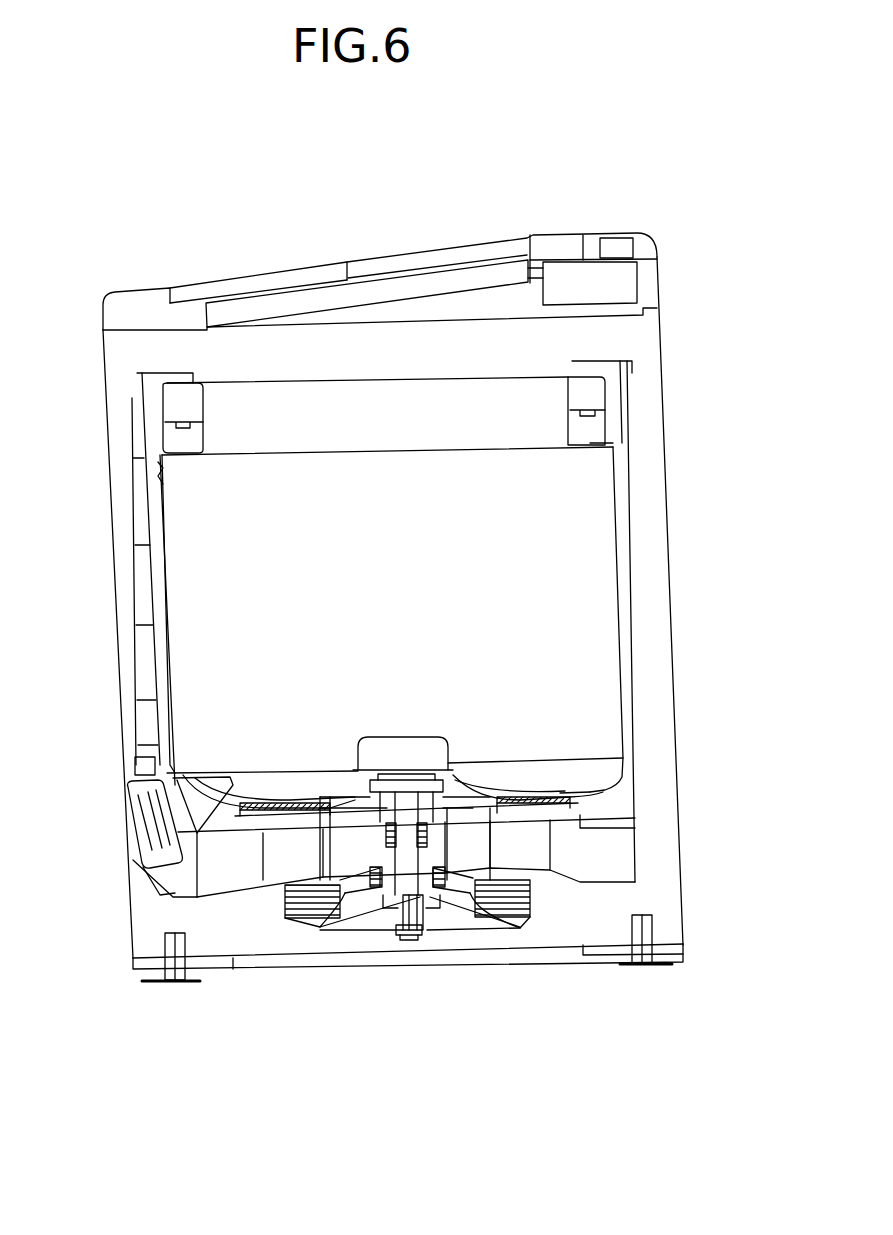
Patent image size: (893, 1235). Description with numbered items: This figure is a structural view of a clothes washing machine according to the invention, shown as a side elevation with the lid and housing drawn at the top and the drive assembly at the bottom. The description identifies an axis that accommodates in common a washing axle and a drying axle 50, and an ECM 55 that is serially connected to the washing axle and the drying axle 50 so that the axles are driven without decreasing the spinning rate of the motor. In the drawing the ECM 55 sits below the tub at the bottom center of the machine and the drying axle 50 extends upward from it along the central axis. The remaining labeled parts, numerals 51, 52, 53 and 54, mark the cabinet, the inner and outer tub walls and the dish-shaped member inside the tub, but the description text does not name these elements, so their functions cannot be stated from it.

The drying axle 50 is at (410, 870).
The cabinet 51 is at (678, 798).
The inner tub (spin basket) 52 is at (630, 483).
The outer tub 53 is at (618, 613).
The pulsator 54 is at (252, 795).
The ECM 55 is at (395, 935).